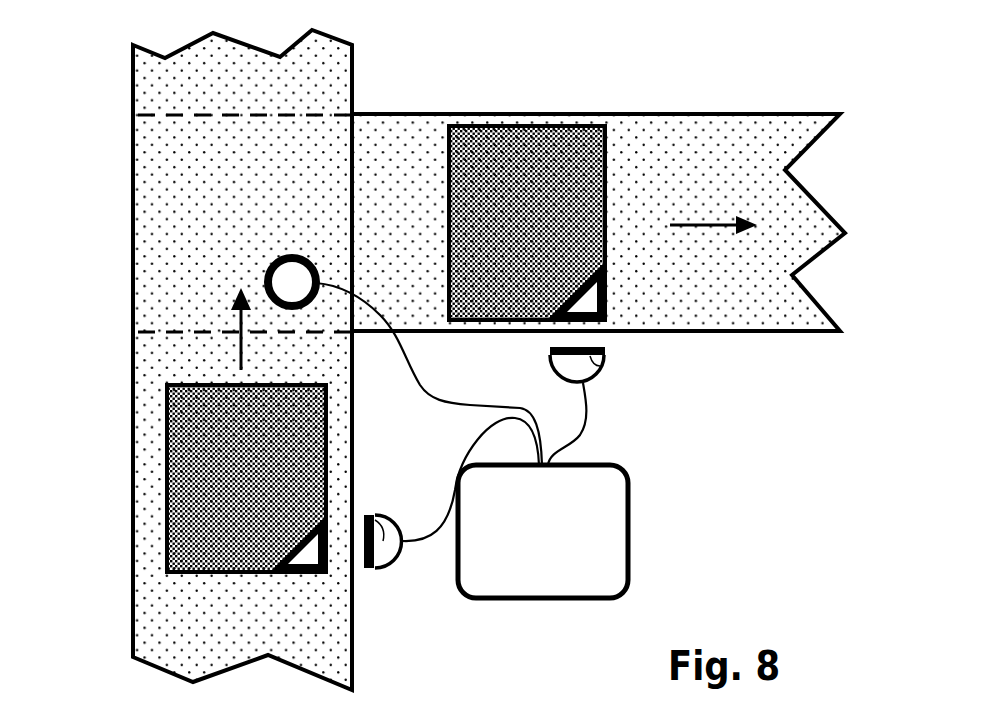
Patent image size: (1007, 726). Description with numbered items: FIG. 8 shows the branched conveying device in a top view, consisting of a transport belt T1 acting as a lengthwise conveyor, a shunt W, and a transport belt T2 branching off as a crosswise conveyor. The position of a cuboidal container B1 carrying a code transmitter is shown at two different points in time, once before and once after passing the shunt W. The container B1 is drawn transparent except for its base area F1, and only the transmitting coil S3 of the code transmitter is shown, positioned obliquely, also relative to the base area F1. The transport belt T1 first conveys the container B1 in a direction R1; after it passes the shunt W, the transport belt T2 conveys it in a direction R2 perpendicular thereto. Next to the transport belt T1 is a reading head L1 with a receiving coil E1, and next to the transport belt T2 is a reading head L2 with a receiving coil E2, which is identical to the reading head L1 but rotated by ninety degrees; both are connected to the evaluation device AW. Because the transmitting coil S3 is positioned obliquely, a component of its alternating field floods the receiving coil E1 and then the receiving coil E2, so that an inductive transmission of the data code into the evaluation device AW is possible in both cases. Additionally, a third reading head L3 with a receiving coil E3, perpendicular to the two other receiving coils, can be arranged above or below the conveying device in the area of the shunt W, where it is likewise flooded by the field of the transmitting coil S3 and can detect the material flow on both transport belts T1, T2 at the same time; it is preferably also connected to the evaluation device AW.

The shunt W is at (441, 359).
The transport belt T1 is at (183, 73).
The transport belt T2 is at (660, 175).
The cuboidal container B1 is at (321, 310).
The base area F1 is at (505, 188).
The transmitting coil S3 is at (578, 283).
The reading head L3 is at (283, 253).
The receiving coil E3 is at (263, 275).
The direction of movement R1 is at (238, 350).
The direction of movement R2 is at (710, 222).
The reading head L1 is at (388, 525).
The receiving coil E1 is at (451, 523).
The reading head L2 is at (553, 368).
The receiving coil E2 is at (572, 406).
The evaluation device AW is at (565, 542).